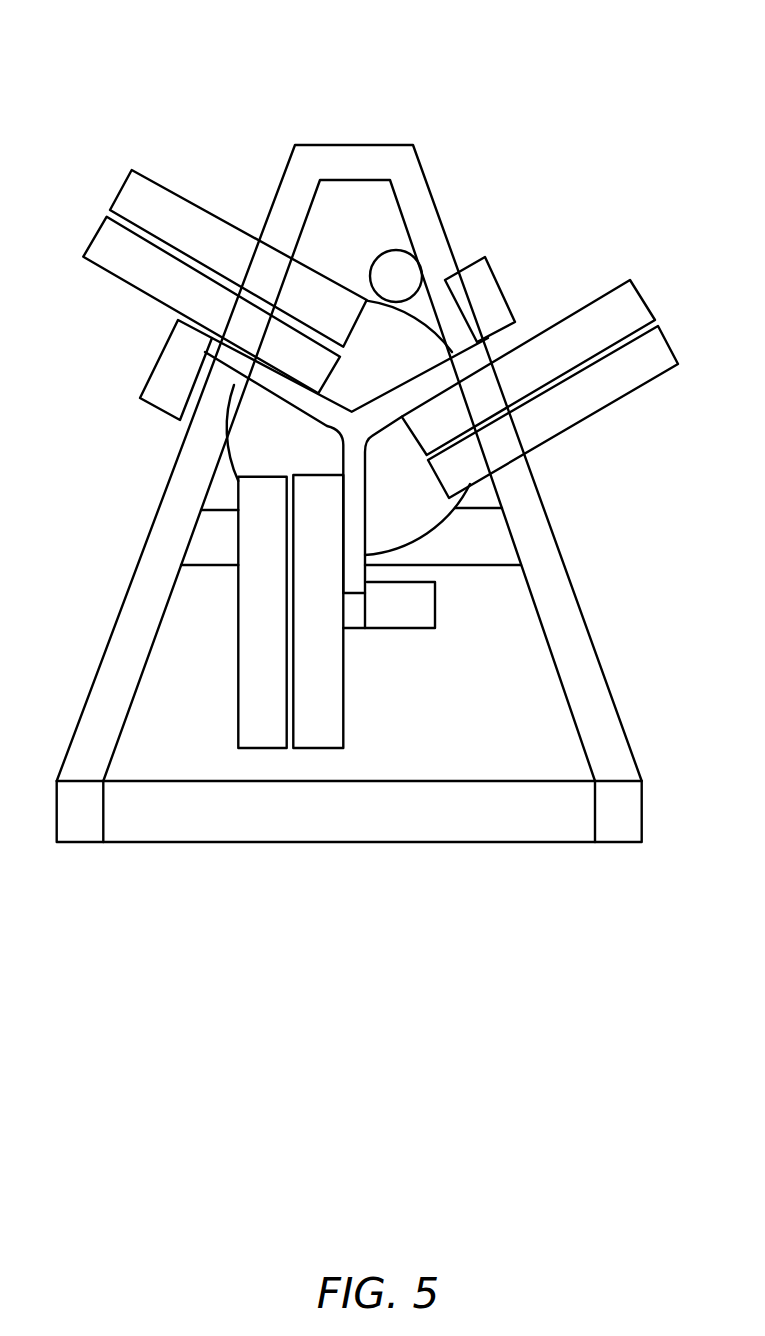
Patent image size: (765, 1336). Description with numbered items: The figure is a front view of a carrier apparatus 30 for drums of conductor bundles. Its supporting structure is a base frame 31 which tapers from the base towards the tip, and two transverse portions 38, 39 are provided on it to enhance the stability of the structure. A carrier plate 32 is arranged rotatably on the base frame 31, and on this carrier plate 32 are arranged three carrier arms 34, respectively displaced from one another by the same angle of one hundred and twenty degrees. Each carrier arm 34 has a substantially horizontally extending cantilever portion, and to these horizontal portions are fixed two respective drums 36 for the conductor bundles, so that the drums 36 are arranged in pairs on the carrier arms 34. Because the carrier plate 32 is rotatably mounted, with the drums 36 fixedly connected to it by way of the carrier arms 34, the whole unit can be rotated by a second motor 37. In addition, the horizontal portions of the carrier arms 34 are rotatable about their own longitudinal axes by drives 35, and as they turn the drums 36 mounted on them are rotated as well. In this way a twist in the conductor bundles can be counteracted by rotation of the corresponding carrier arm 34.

The carrier apparatus 30 is at (445, 102).
The base frame 31 is at (608, 755).
The carrier plate 32 is at (243, 437).
The carrier arm 34 is at (223, 350).
The drive 35 is at (163, 380).
The drum 36 is at (130, 197).
The second motor 37 is at (390, 273).
The transverse portion 38 is at (533, 508).
The transverse portion 39 is at (315, 820).